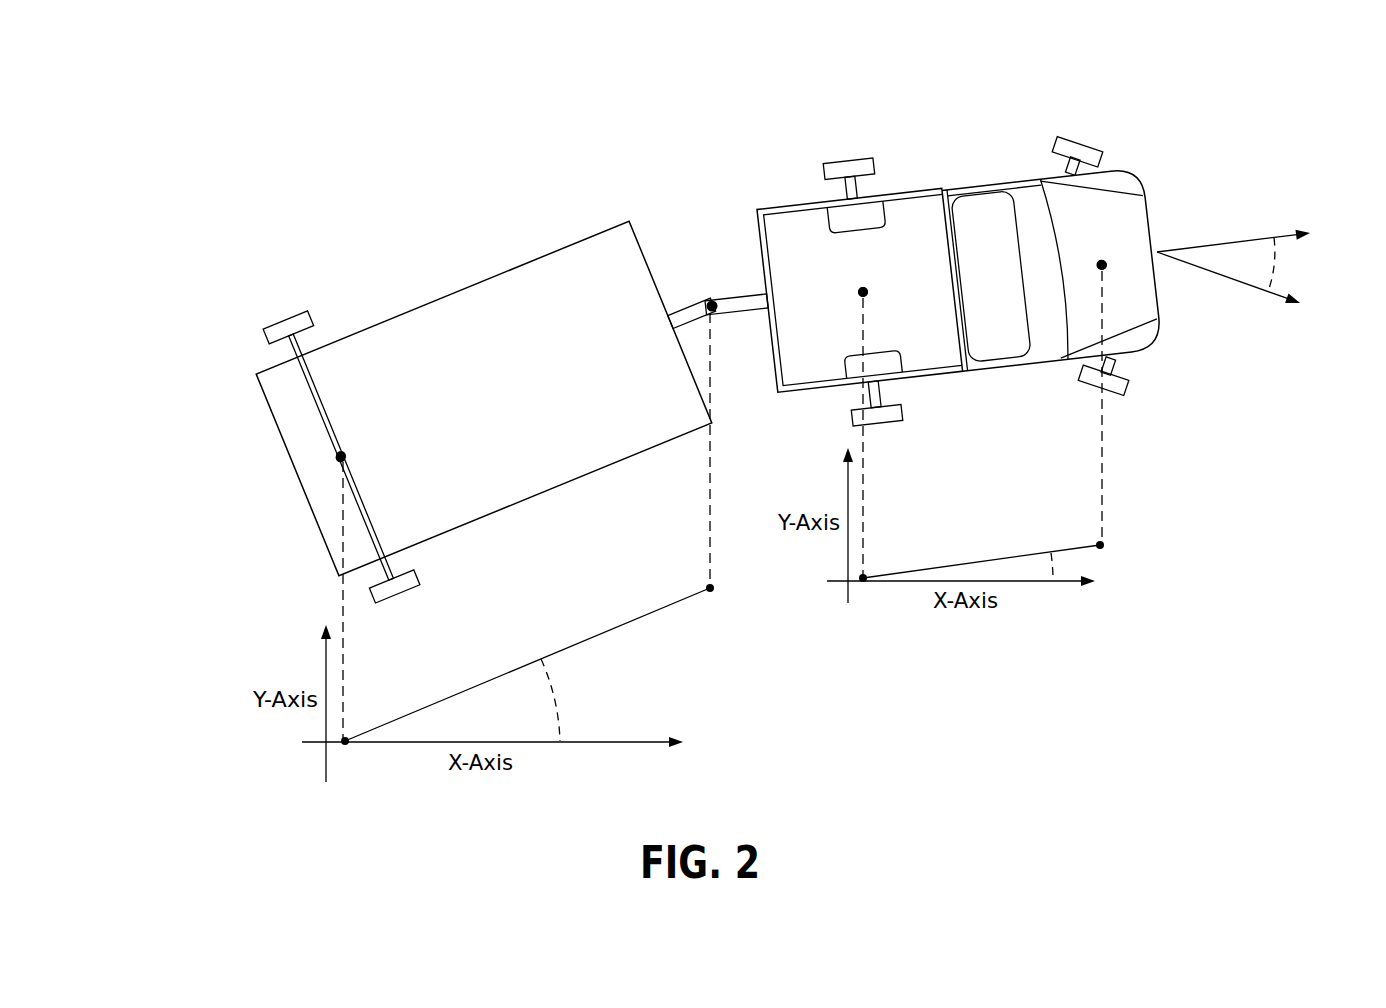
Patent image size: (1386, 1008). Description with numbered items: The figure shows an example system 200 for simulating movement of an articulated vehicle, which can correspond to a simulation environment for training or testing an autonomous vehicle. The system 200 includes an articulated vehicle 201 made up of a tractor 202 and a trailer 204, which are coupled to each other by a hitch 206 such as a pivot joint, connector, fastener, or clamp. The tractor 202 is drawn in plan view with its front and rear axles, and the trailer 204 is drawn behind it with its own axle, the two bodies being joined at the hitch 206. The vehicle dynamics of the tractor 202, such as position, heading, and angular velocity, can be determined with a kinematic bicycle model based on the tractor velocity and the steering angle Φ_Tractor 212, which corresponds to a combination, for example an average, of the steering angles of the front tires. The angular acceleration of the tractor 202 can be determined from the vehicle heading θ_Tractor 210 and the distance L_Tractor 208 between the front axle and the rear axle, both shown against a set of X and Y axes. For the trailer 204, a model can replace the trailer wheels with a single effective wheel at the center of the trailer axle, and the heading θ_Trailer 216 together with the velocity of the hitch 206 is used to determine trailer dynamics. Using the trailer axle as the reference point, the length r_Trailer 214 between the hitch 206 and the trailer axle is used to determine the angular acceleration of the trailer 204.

The system 200 is at (102, 80).
The articulated vehicle 201 is at (758, 156).
The tractor 202 is at (1140, 195).
The trailer 204 is at (545, 252).
The hitch 206 is at (713, 303).
The distance L_Tractor 208 is at (997, 557).
The vehicle heading θ_Tractor 210 is at (1063, 567).
The steering angle Φ_Tractor 212 is at (1283, 273).
The length r_Trailer 214 is at (525, 662).
The heading θ_Trailer 216 is at (565, 707).